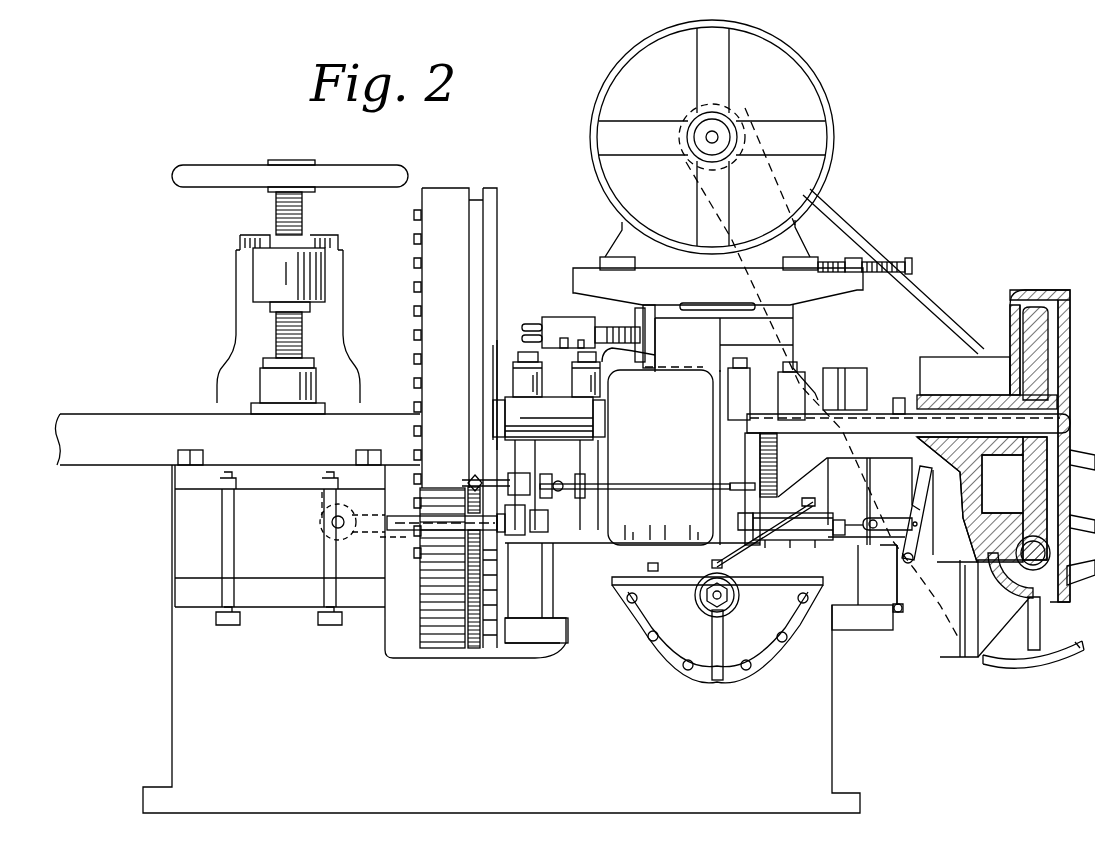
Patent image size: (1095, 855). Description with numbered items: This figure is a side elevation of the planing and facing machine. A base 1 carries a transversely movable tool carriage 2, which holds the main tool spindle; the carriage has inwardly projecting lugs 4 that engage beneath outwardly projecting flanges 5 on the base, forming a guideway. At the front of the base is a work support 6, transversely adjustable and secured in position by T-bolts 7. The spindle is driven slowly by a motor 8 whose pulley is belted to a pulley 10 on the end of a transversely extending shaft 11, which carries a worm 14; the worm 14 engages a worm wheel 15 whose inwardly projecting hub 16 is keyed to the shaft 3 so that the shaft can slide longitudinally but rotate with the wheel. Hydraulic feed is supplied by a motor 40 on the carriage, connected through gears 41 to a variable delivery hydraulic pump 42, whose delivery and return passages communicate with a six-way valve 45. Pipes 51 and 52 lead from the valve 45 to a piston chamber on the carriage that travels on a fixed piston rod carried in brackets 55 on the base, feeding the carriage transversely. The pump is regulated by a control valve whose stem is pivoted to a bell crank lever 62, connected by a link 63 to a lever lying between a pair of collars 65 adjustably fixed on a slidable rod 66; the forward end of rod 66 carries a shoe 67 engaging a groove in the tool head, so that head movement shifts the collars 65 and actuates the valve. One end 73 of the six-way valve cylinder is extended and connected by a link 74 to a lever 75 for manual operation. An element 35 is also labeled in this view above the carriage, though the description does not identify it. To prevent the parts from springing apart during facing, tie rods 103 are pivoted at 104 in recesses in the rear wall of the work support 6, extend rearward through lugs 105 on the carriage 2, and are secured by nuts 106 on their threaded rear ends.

The base 1 is at (183, 680).
The tool carriage 2 is at (880, 600).
The shaft 3 is at (870, 412).
The lugs 4 is at (538, 642).
The flanges 5 is at (553, 592).
The work support 6 is at (183, 538).
The T-bolts 7 is at (322, 620).
The motor 8 is at (808, 72).
The pulley 10 is at (1035, 655).
The shaft 11 is at (1025, 546).
The worm 14 is at (1013, 584).
The worm wheel 15 is at (1025, 325).
The hub 16 is at (980, 366).
The valve 35 is at (566, 325).
The motor 40 is at (912, 499).
The gears 41 is at (779, 453).
The variable delivery hydraulic pump 42 is at (660, 457).
The six-way valve 45 is at (790, 572).
The pipe 51 is at (712, 563).
The pipe 52 is at (897, 611).
The brackets 55 is at (682, 630).
The bell crank lever 62 is at (703, 486).
The link 63 is at (641, 486).
The collars 65 is at (560, 481).
The slidable rod 66 is at (536, 480).
The shoe 67 is at (475, 468).
The extended end of valve cylinder 73 is at (895, 560).
The link 74 is at (916, 532).
The lever 75 is at (934, 556).
The tie rods 103 is at (424, 522).
The pivot 104 is at (338, 522).
The lugs 105 is at (515, 518).
The nuts 106 is at (537, 527).